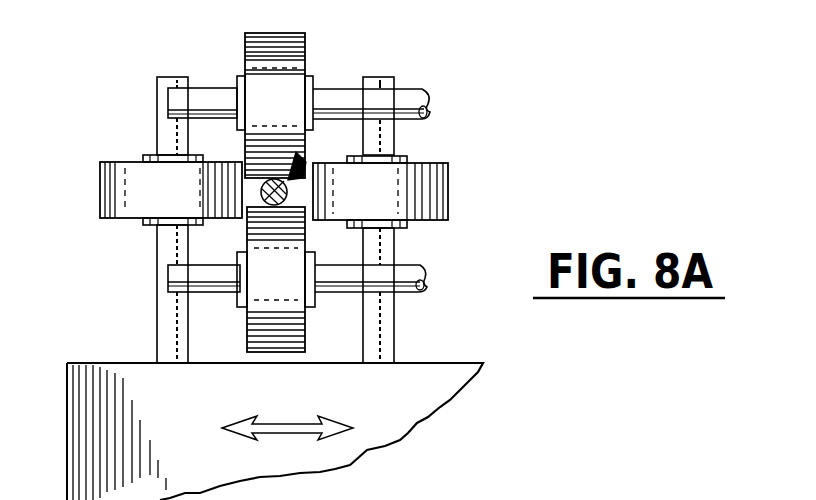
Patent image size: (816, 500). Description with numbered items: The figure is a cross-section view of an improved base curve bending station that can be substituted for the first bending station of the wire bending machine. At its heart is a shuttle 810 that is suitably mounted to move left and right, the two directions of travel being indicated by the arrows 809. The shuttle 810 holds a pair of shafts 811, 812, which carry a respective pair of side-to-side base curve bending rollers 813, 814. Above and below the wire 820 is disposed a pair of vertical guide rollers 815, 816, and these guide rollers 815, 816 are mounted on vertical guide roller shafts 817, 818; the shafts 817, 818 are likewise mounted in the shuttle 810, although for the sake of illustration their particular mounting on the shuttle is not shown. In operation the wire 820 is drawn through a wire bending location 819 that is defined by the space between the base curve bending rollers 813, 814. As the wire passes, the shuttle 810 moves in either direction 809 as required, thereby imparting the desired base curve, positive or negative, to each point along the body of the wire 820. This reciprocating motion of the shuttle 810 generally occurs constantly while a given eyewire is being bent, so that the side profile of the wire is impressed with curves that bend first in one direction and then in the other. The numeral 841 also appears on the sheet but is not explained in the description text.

The direction of movement 809 is at (230, 424).
The base 810 is at (100, 363).
The left upright post 811 is at (168, 77).
The right upright post 812 is at (396, 322).
The right roller 813 is at (450, 193).
The left roller 814 is at (102, 162).
The upper roller 815 is at (307, 52).
The lower roller 816 is at (275, 351).
The upper shaft 817 is at (410, 100).
The lower shaft 818 is at (420, 268).
The ball 819 is at (304, 162).
The lower bar 820 is at (252, 223).
The element 841 is at (551, 490).